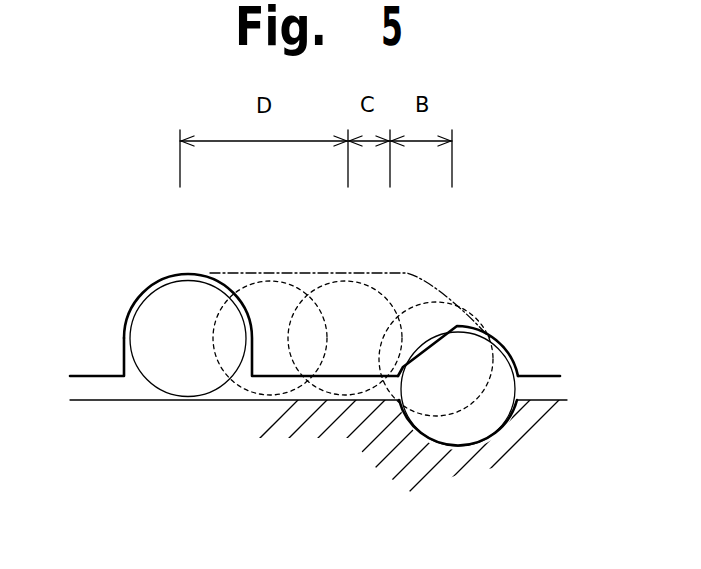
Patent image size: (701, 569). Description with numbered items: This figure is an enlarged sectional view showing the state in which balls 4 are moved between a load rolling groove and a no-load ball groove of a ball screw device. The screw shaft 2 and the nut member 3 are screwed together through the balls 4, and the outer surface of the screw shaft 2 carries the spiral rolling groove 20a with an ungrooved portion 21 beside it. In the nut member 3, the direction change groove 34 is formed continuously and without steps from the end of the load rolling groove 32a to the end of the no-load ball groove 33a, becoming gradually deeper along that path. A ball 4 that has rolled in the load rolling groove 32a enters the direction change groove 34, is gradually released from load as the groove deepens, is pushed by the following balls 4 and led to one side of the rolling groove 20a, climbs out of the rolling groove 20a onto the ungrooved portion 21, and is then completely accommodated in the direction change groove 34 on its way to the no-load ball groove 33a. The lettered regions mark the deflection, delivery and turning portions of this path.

The screw shaft 2 is at (100, 400).
The nut member 3 is at (545, 376).
The ball 4 is at (183, 380).
The rolling groove 20a is at (508, 437).
The ungrooved portion 21 is at (243, 392).
The load rolling groove 32a is at (464, 334).
The no-load ball groove 33a is at (168, 306).
The direction change groove 34 is at (418, 295).